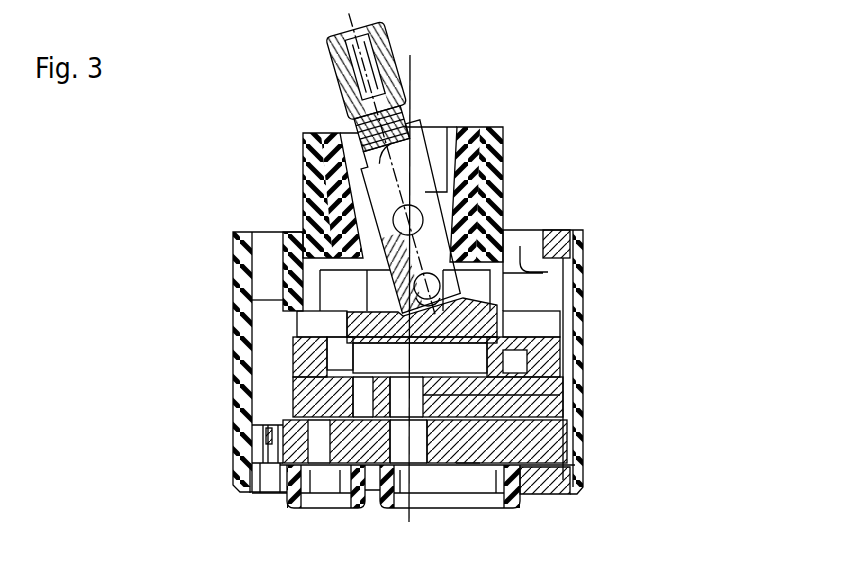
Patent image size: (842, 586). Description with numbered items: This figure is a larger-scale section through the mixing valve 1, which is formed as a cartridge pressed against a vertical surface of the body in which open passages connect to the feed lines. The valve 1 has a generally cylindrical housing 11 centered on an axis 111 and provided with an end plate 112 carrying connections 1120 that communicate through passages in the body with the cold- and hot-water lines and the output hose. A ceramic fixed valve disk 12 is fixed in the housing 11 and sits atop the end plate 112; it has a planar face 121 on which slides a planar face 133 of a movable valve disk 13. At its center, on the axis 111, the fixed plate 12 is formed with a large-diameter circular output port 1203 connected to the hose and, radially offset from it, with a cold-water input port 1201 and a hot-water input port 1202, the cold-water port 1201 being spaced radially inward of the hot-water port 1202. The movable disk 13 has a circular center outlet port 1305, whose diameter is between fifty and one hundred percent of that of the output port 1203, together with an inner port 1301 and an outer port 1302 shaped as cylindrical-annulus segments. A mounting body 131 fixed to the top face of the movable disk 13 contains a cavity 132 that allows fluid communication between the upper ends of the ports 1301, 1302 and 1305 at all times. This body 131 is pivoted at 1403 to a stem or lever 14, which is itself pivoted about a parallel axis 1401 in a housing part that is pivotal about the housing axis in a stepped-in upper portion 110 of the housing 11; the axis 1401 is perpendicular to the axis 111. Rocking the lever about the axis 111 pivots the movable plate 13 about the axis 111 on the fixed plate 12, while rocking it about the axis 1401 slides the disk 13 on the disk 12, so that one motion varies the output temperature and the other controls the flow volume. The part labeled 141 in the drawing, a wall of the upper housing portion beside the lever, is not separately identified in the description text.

The valve cartridge 1 is at (725, 122).
The lower housing part 11 is at (583, 283).
The upper housing part 110 is at (325, 183).
The actuating knob 111 is at (410, 72).
The bottom flange 112 is at (545, 494).
The connection nuts 1120 is at (318, 490).
The base part 12 is at (578, 465).
The spring element 1201 is at (237, 462).
The spring element 1202 is at (237, 462).
The central bore 1203 is at (417, 452).
The inlet channel 121 is at (468, 412).
The control disc unit 13 is at (540, 383).
The upper control disc carrier 131 is at (545, 346).
The control disc cavity 132 is at (393, 349).
The lower valve disc 133 is at (537, 433).
The sealing element 1301 is at (360, 394).
The sealing element 1302 is at (360, 394).
The sealing ring 1305 is at (560, 395).
The actuating lever 14 is at (425, 128).
The lever guide wall 141 is at (500, 138).
The upper pivot pin 1401 is at (420, 213).
The lower pivot pin 1403 is at (430, 280).